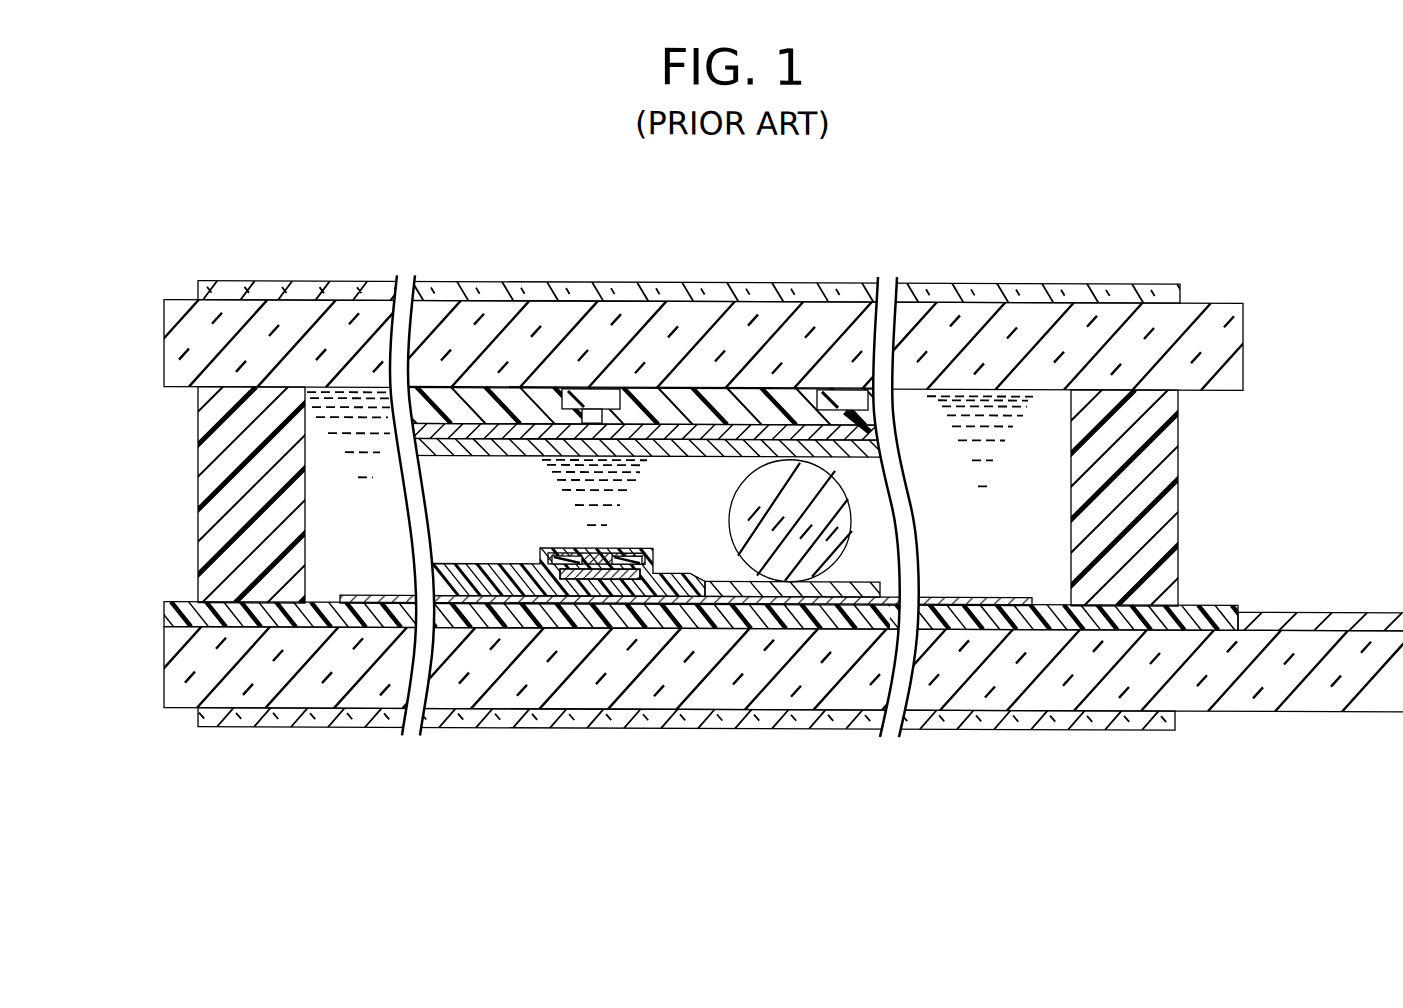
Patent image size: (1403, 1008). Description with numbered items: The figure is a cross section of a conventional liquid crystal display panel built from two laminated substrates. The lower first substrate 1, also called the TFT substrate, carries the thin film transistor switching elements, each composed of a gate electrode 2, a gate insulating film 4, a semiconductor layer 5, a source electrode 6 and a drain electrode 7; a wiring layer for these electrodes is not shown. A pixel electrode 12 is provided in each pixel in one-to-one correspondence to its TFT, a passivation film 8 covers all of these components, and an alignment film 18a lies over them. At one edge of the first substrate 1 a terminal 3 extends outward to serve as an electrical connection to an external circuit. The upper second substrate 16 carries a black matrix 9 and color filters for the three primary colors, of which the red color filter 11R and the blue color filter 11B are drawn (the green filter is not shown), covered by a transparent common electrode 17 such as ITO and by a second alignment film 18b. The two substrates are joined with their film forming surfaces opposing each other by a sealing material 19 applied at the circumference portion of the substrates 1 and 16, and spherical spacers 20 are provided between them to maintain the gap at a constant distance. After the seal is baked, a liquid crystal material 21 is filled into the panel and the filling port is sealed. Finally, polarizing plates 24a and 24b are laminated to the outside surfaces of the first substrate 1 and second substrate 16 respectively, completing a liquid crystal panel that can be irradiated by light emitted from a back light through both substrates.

The first substrate 1 is at (992, 680).
The gate electrode 2 is at (603, 578).
The terminal 3 is at (1338, 620).
The gate insulating film 4 is at (163, 604).
The semiconductor layer 5 is at (590, 566).
The source electrode 6 is at (655, 562).
The drain electrode 7 is at (515, 580).
The passivation film 8 is at (462, 603).
The black matrix 9 is at (570, 392).
The color filter for blue 11B is at (472, 400).
The color filter for red 11R is at (632, 392).
The pixel electrode 12 is at (372, 598).
The second substrate 16 is at (1202, 327).
The transparent common electrode 17 is at (773, 448).
The alignment film 18a is at (560, 596).
The alignment film 18b is at (720, 432).
The sealing material 19 is at (228, 470).
The spherical spacer 20 is at (806, 480).
The liquid crystal material 21 is at (690, 480).
The polarizing plate 24a is at (278, 728).
The polarizing plate 24b is at (240, 296).